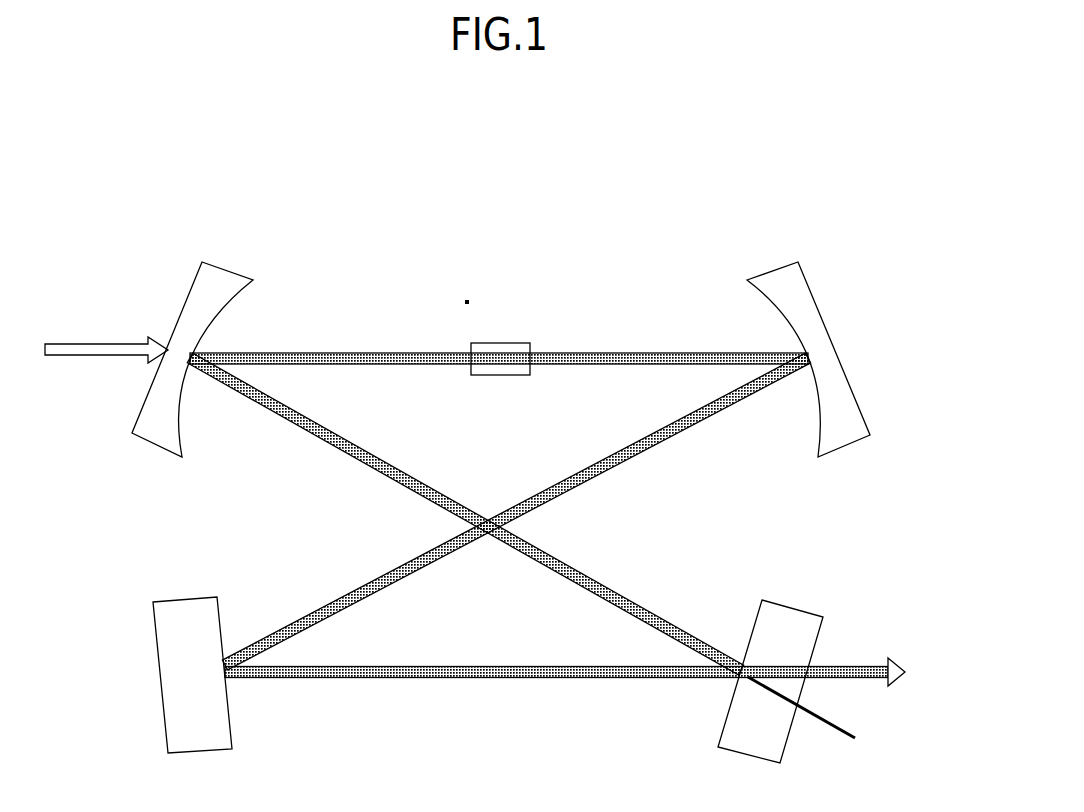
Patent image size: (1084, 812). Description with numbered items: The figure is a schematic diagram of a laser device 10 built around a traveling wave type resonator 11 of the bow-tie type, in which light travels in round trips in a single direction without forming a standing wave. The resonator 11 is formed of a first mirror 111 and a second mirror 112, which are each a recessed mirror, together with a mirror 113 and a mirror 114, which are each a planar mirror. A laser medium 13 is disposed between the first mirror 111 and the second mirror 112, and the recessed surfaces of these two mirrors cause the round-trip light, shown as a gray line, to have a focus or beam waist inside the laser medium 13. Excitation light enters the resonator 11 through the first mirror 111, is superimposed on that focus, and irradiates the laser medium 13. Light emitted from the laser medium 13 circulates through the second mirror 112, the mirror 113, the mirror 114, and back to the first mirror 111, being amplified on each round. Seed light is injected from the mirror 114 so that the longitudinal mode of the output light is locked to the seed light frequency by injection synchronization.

The laser device 10 is at (73, 166).
The traveling wave type resonator 11 is at (653, 549).
The laser medium 13 is at (530, 351).
The first mirror 111 is at (228, 268).
The second mirror 112 is at (772, 270).
The mirror 113 is at (185, 597).
The mirror 114 is at (792, 607).